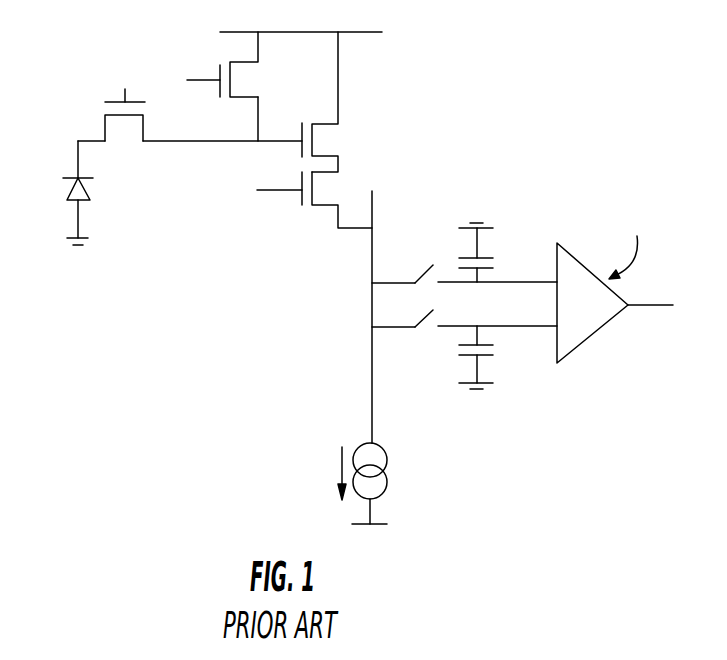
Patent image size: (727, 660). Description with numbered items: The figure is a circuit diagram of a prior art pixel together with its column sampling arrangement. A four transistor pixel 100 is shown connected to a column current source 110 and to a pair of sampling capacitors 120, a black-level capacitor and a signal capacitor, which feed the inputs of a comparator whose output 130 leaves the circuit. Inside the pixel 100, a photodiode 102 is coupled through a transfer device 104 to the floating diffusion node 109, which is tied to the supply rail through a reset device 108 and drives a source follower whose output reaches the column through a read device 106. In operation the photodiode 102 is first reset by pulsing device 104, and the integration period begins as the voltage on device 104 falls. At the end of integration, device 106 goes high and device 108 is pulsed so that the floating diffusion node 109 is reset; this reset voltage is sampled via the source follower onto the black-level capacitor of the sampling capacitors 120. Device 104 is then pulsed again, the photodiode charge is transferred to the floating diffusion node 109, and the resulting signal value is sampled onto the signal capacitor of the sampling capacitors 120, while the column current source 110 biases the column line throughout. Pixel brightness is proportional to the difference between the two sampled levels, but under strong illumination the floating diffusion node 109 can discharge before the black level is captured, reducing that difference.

The four transistor pixel 100 is at (249, 124).
The photodiode 102 is at (67, 193).
The device 104 is at (87, 70).
The device 106 is at (268, 194).
The device 108 is at (193, 53).
The floating diffusion (FD node) 109 is at (258, 123).
The column current source 110 is at (332, 467).
The sampling capacitors 120 is at (493, 250).
The comparator output 130 is at (624, 286).